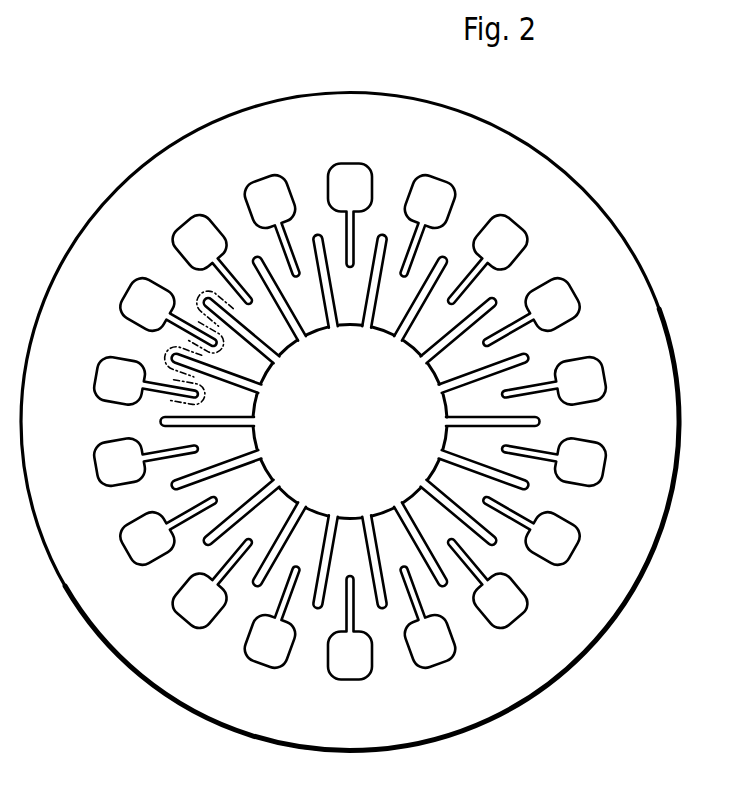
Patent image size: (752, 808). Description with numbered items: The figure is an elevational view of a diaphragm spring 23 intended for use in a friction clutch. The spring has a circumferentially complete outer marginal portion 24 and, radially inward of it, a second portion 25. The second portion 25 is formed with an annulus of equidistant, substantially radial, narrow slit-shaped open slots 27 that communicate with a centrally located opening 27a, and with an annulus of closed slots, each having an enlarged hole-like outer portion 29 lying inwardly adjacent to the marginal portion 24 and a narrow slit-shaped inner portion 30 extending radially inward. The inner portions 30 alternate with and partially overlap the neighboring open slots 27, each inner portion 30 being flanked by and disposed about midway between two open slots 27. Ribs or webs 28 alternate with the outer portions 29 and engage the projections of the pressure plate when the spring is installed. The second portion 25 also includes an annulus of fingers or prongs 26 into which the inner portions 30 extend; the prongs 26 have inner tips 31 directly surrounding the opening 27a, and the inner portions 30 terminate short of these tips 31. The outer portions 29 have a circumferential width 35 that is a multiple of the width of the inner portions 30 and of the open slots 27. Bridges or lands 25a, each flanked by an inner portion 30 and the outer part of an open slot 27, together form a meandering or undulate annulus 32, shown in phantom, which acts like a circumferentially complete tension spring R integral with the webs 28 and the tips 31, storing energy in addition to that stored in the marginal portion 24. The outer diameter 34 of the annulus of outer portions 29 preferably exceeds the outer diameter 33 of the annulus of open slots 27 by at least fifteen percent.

The diaphragm spring 23 is at (199, 125).
The outer marginal portion 24 is at (360, 123).
The second portion 25 is at (414, 207).
The bridges or lands 25a is at (434, 251).
The fingers or prongs 26 is at (503, 534).
The open slots 27 is at (350, 422).
The central opening 27a is at (348, 465).
The ribs or webs 28 is at (575, 464).
The enlarged outer portions of closed slots 29 is at (508, 287).
The inner portions of closed slots 30 is at (556, 362).
The tips of prongs 31 is at (439, 347).
The meandering or undulate annulus 32 is at (196, 345).
The outer diameter of annulus of open slots 33 is at (353, 617).
The outer diameter of annulus of enlarged outer portions 34 is at (290, 618).
The width of outer portions 35 is at (437, 633).
The tension spring R is at (574, 391).